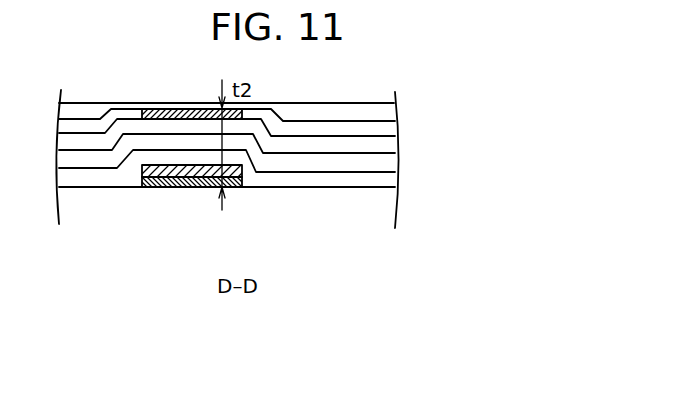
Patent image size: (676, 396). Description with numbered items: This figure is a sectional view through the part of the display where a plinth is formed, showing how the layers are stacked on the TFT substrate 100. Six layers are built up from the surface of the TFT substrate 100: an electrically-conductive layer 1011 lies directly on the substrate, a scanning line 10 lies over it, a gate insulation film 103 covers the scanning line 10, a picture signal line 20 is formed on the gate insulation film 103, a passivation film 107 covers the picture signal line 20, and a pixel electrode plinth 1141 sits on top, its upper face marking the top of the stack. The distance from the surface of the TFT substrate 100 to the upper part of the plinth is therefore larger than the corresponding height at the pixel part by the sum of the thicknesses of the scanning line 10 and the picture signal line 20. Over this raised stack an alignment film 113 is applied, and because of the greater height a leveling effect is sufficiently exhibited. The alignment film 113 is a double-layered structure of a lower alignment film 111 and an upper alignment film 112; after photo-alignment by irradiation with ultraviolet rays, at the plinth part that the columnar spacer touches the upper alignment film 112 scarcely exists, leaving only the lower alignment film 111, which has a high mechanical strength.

The scanning line 10 is at (154, 176).
The electrically-conductive layer 1011 is at (191, 182).
The pixel electrode plinth 1141 is at (169, 108).
The picture signal line 20 is at (394, 163).
The TFT substrate 100 is at (395, 205).
The gate insulation film 103 is at (395, 177).
The passivation film 107 is at (395, 145).
The lower alignment film 111 is at (395, 130).
The upper alignment film 112 is at (393, 107).
The alignment film 113 is at (289, 109).